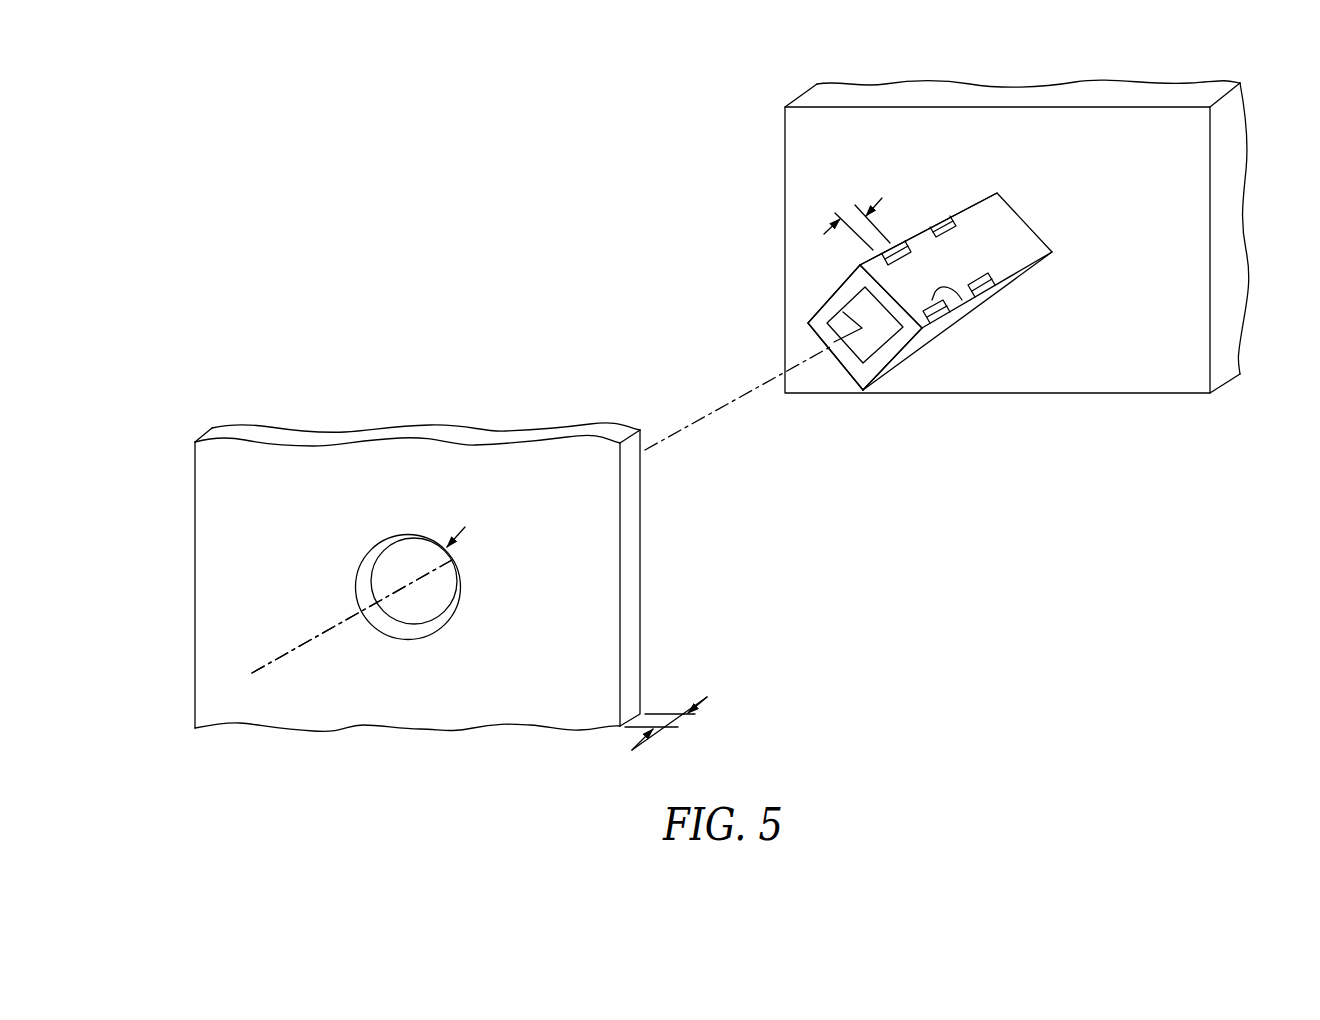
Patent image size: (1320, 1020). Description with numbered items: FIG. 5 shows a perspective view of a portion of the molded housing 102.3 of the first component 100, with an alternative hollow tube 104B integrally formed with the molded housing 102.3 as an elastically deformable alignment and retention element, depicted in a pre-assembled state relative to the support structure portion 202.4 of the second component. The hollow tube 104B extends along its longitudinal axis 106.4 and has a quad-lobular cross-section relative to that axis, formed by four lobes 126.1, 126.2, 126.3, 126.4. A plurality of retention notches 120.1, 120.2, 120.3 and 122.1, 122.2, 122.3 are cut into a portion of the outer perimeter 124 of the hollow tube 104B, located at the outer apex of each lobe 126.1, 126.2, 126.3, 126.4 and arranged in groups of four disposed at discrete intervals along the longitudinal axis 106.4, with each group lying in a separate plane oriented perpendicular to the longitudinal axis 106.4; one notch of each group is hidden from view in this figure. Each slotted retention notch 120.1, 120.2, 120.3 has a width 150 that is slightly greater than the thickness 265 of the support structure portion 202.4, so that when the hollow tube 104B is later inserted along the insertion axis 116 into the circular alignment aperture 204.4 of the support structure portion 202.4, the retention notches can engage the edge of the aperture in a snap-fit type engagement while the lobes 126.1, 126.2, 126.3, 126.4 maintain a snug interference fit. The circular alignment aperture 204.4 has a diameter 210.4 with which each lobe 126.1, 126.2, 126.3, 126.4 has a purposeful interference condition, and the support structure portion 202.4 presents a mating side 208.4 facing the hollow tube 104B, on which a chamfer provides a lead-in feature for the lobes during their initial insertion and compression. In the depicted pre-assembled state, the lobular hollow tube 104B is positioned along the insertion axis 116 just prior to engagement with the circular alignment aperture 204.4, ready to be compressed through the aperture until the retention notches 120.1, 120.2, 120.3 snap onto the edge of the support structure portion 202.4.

The first component 100 is at (1222, 114).
The molded housing 102.3 is at (1083, 395).
The hollow tube 104B is at (970, 200).
The outer perimeter 124 is at (907, 237).
The retention notch 120.1 is at (880, 254).
The retention notch 122.1 is at (940, 237).
The retention notch 122.2 is at (976, 276).
The retention notch 122.3 is at (951, 330).
The retention notch 120.2 is at (962, 300).
The retention notch 120.3 is at (893, 363).
The lobe 126.1 is at (857, 263).
The lobe 126.2 is at (926, 332).
The lobe 126.3 is at (862, 392).
The lobe 126.4 is at (802, 322).
The width 150 is at (878, 256).
The insertion axis 116 is at (541, 510).
The support structure portion 202.4 is at (194, 533).
The mating side 208.4 is at (301, 427).
The circular alignment aperture 204.4 is at (462, 585).
The diameter 210.4 is at (368, 624).
The longitudinal axis 106.4 is at (313, 638).
The thickness 265 is at (673, 720).